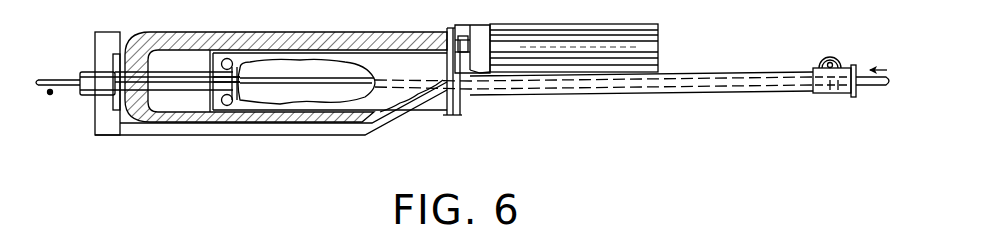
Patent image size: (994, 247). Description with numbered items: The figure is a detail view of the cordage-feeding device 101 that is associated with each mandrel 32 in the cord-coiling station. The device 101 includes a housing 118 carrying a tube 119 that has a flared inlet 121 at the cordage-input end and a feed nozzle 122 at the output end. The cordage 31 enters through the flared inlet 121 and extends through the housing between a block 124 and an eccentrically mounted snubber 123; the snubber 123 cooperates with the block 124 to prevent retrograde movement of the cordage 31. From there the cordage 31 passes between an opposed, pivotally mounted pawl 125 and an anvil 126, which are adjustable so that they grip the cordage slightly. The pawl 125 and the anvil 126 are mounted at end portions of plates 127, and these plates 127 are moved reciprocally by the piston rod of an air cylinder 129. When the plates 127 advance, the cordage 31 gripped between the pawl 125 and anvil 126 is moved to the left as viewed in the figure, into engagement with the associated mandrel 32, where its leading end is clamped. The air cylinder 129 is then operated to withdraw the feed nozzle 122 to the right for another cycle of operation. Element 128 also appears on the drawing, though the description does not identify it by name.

The cordage-feeding device 101 is at (357, 24).
The cordage 31 is at (63, 80).
The mandrel 32 is at (49, 95).
The housing 118 is at (313, 133).
The tube 119 is at (732, 75).
The flared inlet 121 is at (842, 67).
The feed nozzle 122 is at (90, 98).
The snubber 123 is at (827, 62).
The block 124 is at (826, 94).
The pawl 125 is at (221, 60).
The anvil 126 is at (214, 88).
The plates 127 is at (282, 50).
The sleeve 128 is at (413, 55).
The air cylinder 129 is at (590, 22).